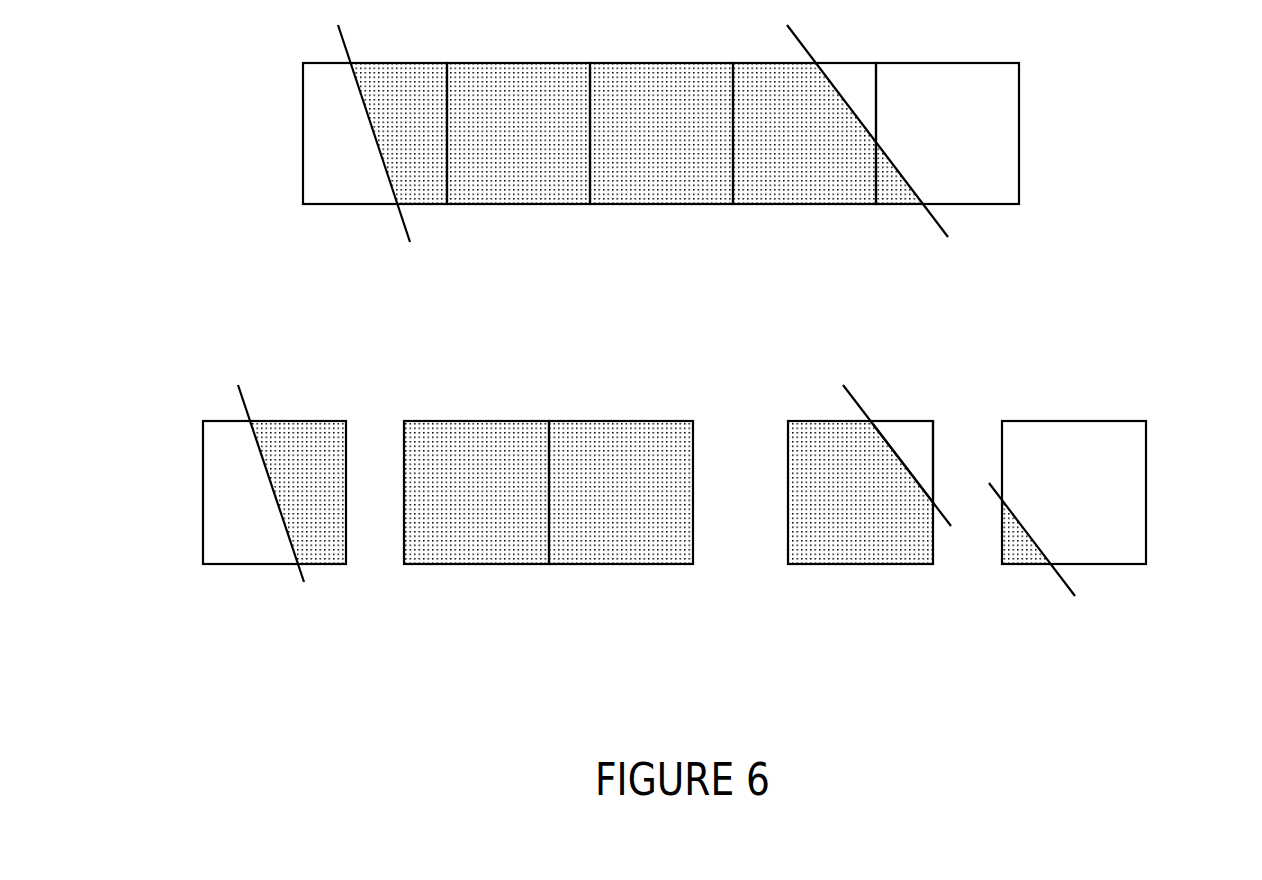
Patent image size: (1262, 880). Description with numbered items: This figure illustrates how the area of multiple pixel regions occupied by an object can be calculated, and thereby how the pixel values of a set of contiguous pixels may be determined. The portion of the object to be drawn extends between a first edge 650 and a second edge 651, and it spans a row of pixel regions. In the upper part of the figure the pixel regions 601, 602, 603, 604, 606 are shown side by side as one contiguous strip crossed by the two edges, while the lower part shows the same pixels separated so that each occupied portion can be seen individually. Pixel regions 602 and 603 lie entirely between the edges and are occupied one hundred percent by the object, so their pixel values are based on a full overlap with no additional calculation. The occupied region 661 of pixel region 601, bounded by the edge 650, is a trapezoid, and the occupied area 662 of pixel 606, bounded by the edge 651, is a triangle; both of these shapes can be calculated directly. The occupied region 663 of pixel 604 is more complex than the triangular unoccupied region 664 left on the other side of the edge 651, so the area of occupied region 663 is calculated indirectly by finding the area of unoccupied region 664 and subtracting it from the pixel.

The pixel region 601 is at (335, 208).
The pixel region 602 is at (567, 208).
The pixel region 603 is at (700, 208).
The pixel 604 is at (853, 208).
The pixel 606 is at (948, 208).
The edge 650 is at (343, 45).
The edge 651 is at (802, 48).
The occupied region 661 is at (330, 456).
The occupied area 662 is at (1020, 538).
The occupied region 663 is at (832, 543).
The unoccupied region 664 is at (915, 447).